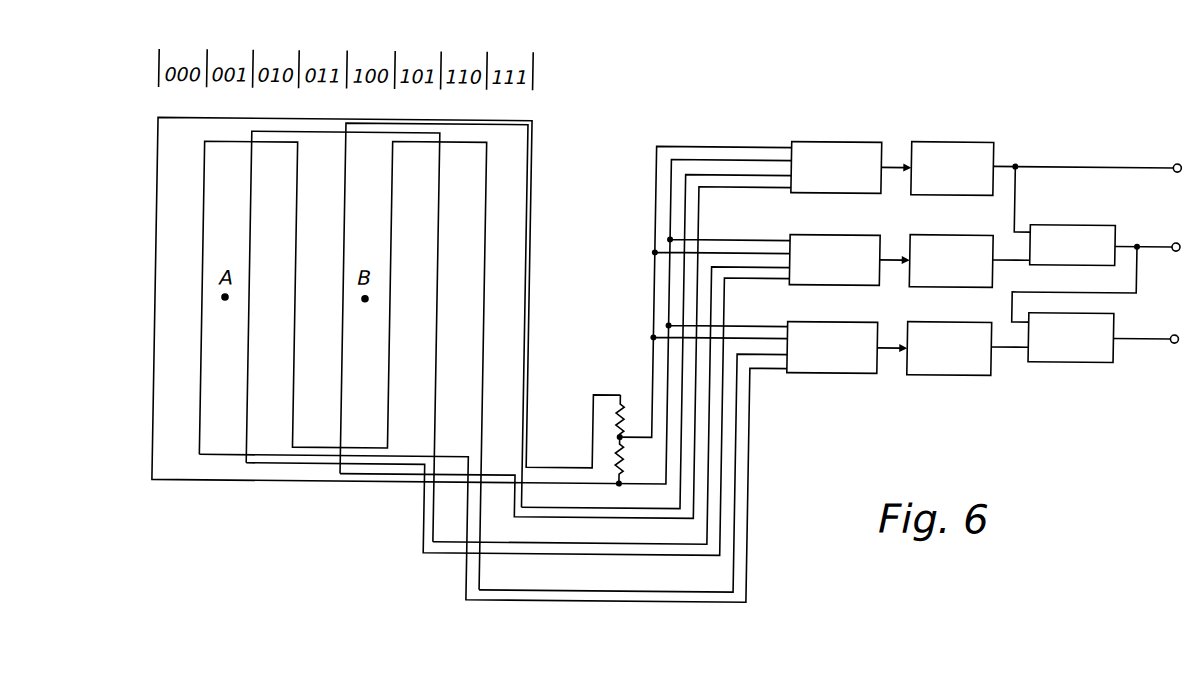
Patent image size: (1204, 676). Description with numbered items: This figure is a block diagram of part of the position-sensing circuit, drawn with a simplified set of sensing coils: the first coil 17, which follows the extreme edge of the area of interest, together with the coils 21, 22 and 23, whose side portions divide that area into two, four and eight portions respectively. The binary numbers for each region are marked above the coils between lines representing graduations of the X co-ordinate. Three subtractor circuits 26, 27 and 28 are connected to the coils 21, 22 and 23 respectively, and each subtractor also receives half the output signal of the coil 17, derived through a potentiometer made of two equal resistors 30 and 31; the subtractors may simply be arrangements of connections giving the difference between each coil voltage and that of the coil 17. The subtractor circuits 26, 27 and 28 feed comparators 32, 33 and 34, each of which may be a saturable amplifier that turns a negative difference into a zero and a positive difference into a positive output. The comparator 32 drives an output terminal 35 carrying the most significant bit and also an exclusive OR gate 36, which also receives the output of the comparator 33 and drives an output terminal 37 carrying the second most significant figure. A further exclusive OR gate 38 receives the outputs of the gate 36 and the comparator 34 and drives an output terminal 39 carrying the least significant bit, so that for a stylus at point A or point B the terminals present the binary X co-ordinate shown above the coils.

The first coil 17 is at (155, 362).
The coil 21 is at (526, 328).
The coil 22 is at (283, 467).
The coil 23 is at (200, 458).
The subtractor circuit 26 is at (862, 139).
The subtractor circuit 27 is at (854, 232).
The subtractor circuit 28 is at (852, 319).
The resistor 30 is at (624, 403).
The resistor 31 is at (620, 454).
The comparator 32 is at (974, 138).
The comparator 33 is at (959, 231).
The comparator 34 is at (965, 318).
The output terminal 35 is at (1176, 158).
The exclusive OR gate 36 is at (1090, 195).
The output terminal 37 is at (1180, 209).
The exclusive OR gate 38 is at (1101, 357).
The output terminal 39 is at (1182, 301).